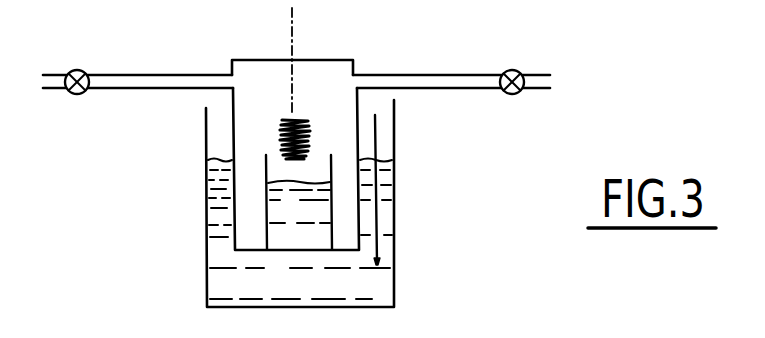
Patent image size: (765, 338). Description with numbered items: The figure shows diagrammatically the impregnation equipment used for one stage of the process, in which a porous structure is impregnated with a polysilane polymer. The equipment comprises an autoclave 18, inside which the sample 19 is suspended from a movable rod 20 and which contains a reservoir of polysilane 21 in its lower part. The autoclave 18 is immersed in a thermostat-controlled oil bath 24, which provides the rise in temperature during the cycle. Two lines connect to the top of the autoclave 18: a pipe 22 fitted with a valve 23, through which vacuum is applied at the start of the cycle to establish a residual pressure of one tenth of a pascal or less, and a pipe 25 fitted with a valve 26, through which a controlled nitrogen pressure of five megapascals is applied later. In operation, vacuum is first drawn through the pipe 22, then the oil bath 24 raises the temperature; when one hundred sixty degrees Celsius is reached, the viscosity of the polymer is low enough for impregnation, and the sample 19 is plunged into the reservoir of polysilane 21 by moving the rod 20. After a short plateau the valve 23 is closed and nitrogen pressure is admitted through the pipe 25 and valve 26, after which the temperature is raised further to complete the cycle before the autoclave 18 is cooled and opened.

The autoclave 18 is at (361, 203).
The sample 19 is at (284, 149).
The movable rod 20 is at (288, 20).
The reservoir of polysilane 21 is at (288, 226).
The pipe 22 is at (413, 74).
The valve 23 is at (512, 70).
The thermostat-controlled oil bath 24 is at (372, 301).
The pipe 25 is at (153, 74).
The valve 26 is at (76, 71).